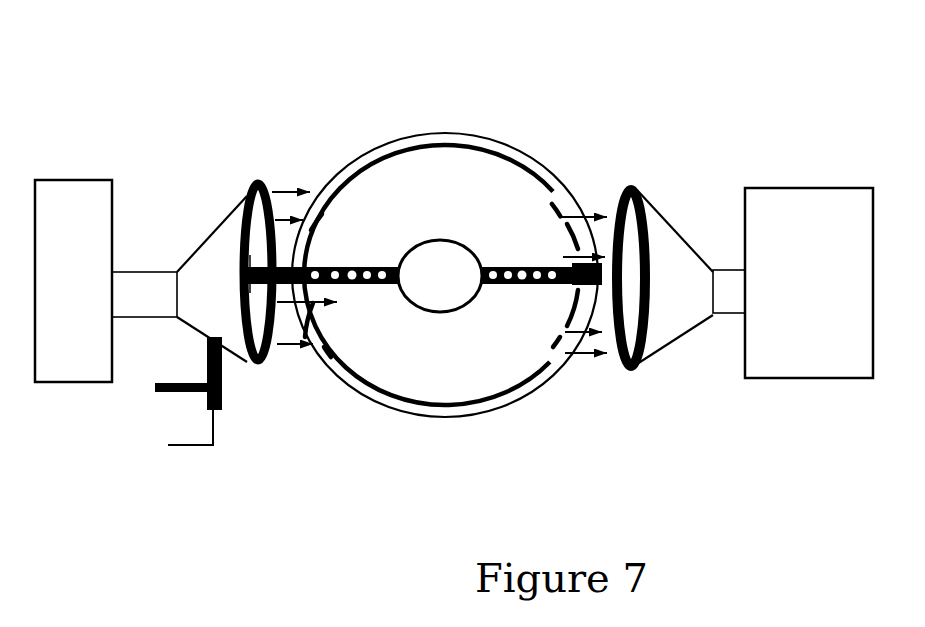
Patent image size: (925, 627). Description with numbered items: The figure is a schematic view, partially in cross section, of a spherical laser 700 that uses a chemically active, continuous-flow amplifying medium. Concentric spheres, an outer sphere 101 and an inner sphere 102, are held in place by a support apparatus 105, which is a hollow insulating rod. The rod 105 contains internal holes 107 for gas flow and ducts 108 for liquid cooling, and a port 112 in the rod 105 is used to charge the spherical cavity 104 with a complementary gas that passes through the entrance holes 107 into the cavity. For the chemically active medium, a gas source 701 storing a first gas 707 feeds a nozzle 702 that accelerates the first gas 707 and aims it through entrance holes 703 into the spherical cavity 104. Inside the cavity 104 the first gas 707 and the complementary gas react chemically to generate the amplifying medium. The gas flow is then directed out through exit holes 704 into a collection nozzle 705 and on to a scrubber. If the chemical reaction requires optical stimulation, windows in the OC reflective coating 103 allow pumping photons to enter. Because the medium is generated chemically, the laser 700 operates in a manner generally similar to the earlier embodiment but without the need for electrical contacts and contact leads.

The spherical laser 700 is at (690, 89).
The gas source 701 is at (68, 180).
The nozzle 702 is at (247, 196).
The entrance holes 703 is at (330, 190).
The exit holes 704 is at (558, 187).
The collection nozzle 705 is at (637, 187).
The first gas 707 is at (286, 348).
The outer sphere 101 is at (528, 162).
The inner sphere 102 is at (422, 242).
The OC reflective coating 103 is at (495, 117).
The spherical cavity 104 is at (498, 368).
The support apparatus 105 is at (222, 402).
The internal holes 107 is at (488, 285).
The ducts 108 is at (173, 432).
The port 112 is at (175, 378).